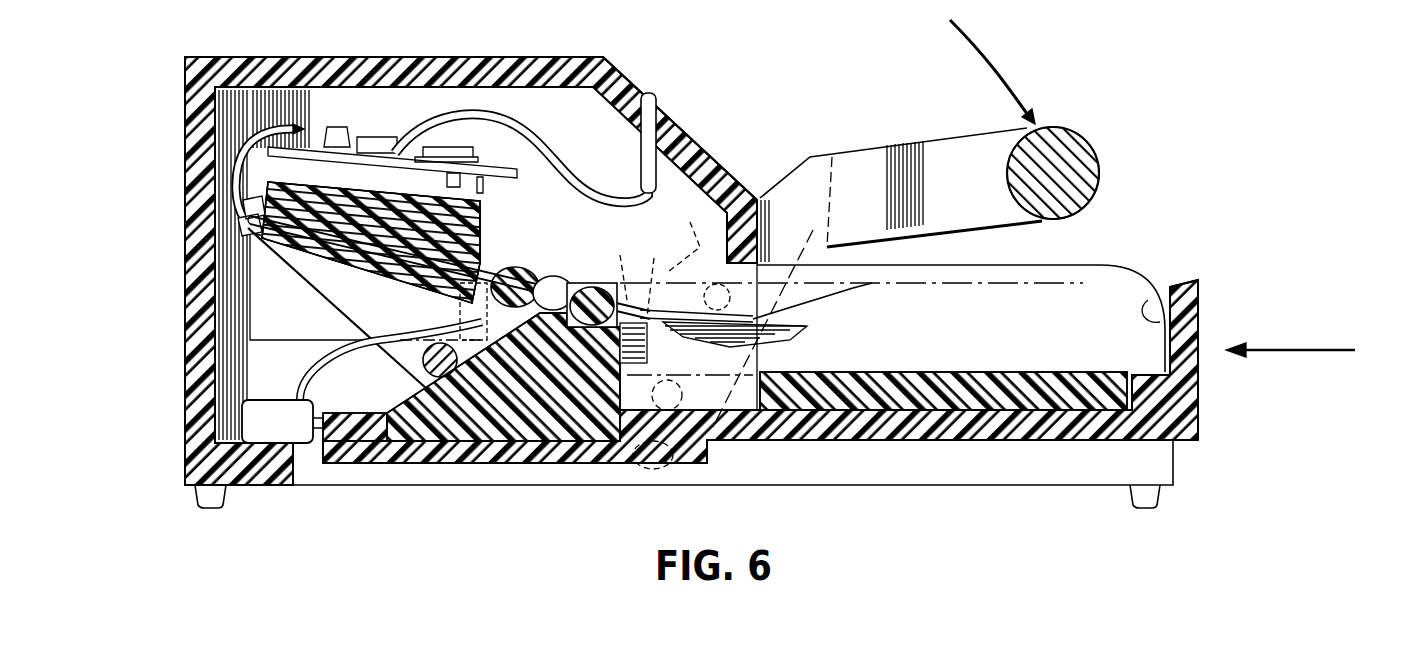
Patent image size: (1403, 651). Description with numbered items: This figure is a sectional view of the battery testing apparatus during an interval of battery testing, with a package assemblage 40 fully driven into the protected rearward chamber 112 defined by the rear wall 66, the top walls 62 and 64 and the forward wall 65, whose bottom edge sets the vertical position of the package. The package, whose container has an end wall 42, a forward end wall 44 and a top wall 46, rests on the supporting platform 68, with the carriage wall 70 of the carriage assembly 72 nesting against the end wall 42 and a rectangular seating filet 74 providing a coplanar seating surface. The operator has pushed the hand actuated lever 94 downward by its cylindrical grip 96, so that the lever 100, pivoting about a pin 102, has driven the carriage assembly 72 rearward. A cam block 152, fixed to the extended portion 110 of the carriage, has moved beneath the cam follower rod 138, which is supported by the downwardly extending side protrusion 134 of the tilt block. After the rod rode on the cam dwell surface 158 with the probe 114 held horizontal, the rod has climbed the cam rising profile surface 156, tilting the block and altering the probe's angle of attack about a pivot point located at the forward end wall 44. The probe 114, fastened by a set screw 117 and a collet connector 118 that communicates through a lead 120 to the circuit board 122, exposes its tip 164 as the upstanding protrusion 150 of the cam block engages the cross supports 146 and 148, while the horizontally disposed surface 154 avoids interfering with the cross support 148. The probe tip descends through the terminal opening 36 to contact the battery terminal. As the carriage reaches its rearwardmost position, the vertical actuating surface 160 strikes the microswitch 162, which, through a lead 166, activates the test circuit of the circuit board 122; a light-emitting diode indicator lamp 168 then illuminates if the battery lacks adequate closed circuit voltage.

The top wall 62 is at (430, 57).
The rear wall 66 is at (205, 150).
The top wall 64 is at (713, 170).
The forward wall 65 is at (762, 203).
The chamber 112 is at (583, 119).
The lead 120 is at (250, 152).
The circuit board 122 is at (435, 124).
The indicator lamp 168 is at (656, 104).
The set screw 117 is at (302, 243).
The collet connector 118 is at (253, 255).
The side protrusion 134 is at (347, 307).
The lead 166 is at (328, 360).
The cam follower rod 138 is at (440, 355).
The extended portion of carriage 110 is at (537, 462).
The carriage assembly 72 is at (1090, 440).
The end wall 42 is at (1167, 303).
The rectangular seating filet 74 is at (1143, 380).
The vertical actuating surface 160 is at (317, 446).
The cam dwell surface 158 is at (333, 418).
The cam rising profile surface 156 is at (440, 395).
The microswitch 162 is at (270, 412).
The supporting platform 68 is at (1018, 372).
The package assemblage 40 is at (1118, 304).
The top wall 46 is at (1068, 283).
The carriage wall 70 is at (1190, 328).
The lever 100 is at (877, 165).
The cylindrical grip 96 is at (1070, 150).
The hand actuated lever 94 is at (1046, 120).
The terminal opening 36 is at (800, 293).
The cross support 146 is at (525, 265).
The upstanding protrusion 150 is at (556, 276).
The horizontally disposed surface 154 is at (570, 327).
The cross support 148 is at (597, 283).
The cam block 152 is at (653, 357).
The end wall 44 is at (621, 254).
The probe 114 is at (645, 313).
The pin 102 is at (700, 245).
The probe tip 164 is at (753, 285).